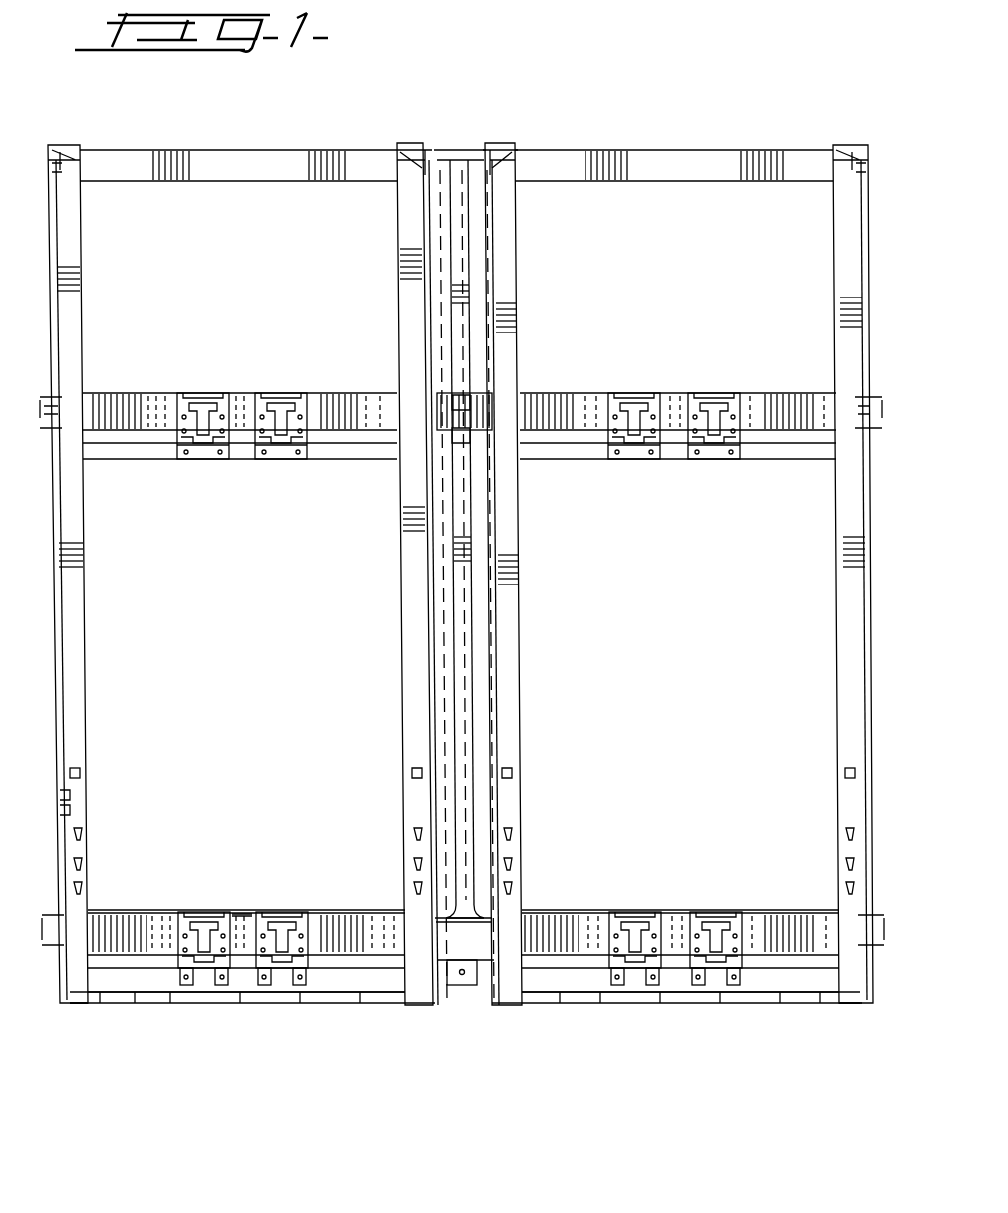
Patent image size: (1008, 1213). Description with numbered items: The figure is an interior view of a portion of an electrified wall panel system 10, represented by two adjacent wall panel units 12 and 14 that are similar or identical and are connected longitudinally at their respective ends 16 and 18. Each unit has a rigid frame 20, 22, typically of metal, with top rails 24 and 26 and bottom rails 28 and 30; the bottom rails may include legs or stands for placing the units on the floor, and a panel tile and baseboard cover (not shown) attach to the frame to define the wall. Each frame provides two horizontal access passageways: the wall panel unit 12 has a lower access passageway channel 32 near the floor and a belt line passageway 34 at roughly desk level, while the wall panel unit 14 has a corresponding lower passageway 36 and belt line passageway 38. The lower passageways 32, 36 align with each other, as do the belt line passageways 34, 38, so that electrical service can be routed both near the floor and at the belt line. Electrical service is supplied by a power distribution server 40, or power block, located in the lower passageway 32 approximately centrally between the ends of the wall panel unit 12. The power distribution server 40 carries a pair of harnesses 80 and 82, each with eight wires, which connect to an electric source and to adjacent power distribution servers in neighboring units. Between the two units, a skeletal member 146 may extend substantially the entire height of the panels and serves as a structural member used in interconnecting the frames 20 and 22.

The electrified wall panel system 10 is at (78, 128).
The wall panel unit 12 is at (232, 318).
The wall panel unit 14 is at (667, 318).
The end 16 is at (422, 543).
The end 18 is at (485, 518).
The frame 20 is at (85, 238).
The frame 22 is at (832, 246).
The top rail 24 is at (262, 182).
The top rail 26 is at (575, 182).
The bottom rail 28 is at (310, 1005).
The bottom rail 30 is at (608, 1005).
The lower access passageway channel 32 is at (237, 920).
The belt line passageway 34 is at (122, 430).
The lower passageway 36 is at (597, 912).
The belt line passageway 38 is at (783, 432).
The power distribution server 40 is at (246, 898).
The harness 80 is at (364, 940).
The harness 82 is at (118, 940).
The skeletal member 146 is at (468, 642).